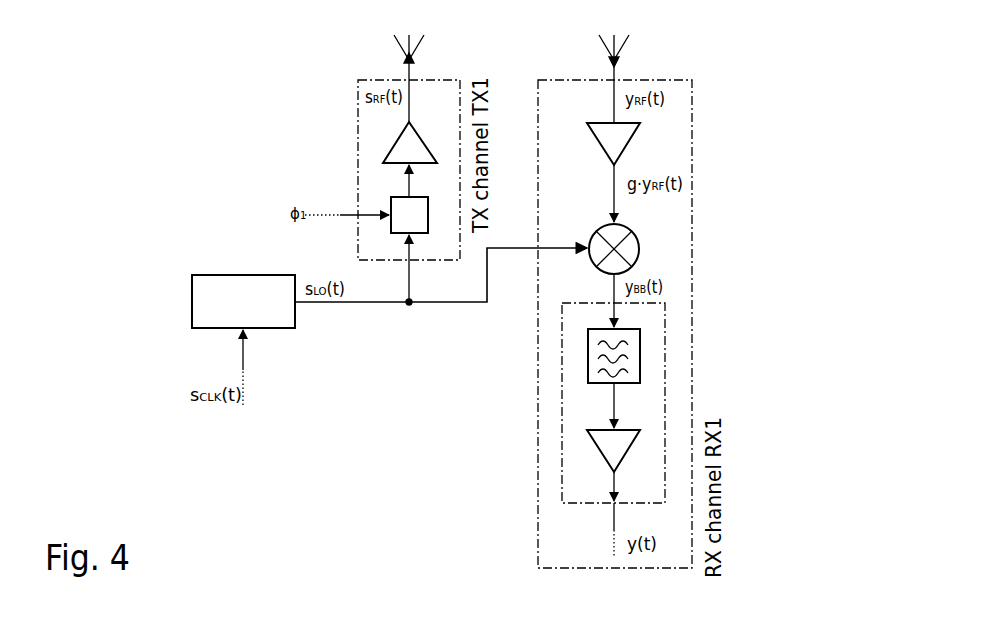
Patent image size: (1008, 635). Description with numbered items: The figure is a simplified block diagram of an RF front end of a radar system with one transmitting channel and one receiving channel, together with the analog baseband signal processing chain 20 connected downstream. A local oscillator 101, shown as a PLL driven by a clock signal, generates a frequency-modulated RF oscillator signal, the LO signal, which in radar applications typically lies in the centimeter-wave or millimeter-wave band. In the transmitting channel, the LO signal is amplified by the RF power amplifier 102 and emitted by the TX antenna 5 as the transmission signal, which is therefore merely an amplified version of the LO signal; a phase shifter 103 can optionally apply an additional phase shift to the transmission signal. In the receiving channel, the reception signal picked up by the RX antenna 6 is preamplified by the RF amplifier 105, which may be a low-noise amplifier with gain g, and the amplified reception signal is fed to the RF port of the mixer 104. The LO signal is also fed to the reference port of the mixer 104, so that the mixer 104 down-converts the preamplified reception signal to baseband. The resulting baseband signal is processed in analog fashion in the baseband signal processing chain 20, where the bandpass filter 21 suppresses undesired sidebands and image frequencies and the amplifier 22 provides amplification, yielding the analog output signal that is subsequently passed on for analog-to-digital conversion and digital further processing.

The TX antenna 5 is at (397, 52).
The RF power amplifier 102 is at (390, 148).
The phase shifter 103 is at (391, 200).
The local oscillator 101 is at (236, 275).
The RX antenna 6 is at (623, 52).
The RF amplifier 105 is at (637, 136).
The mixer 104 is at (639, 246).
The baseband signal processing chain 20 is at (562, 503).
The bandpass filter 21 is at (588, 350).
The amplifier 22 is at (590, 455).